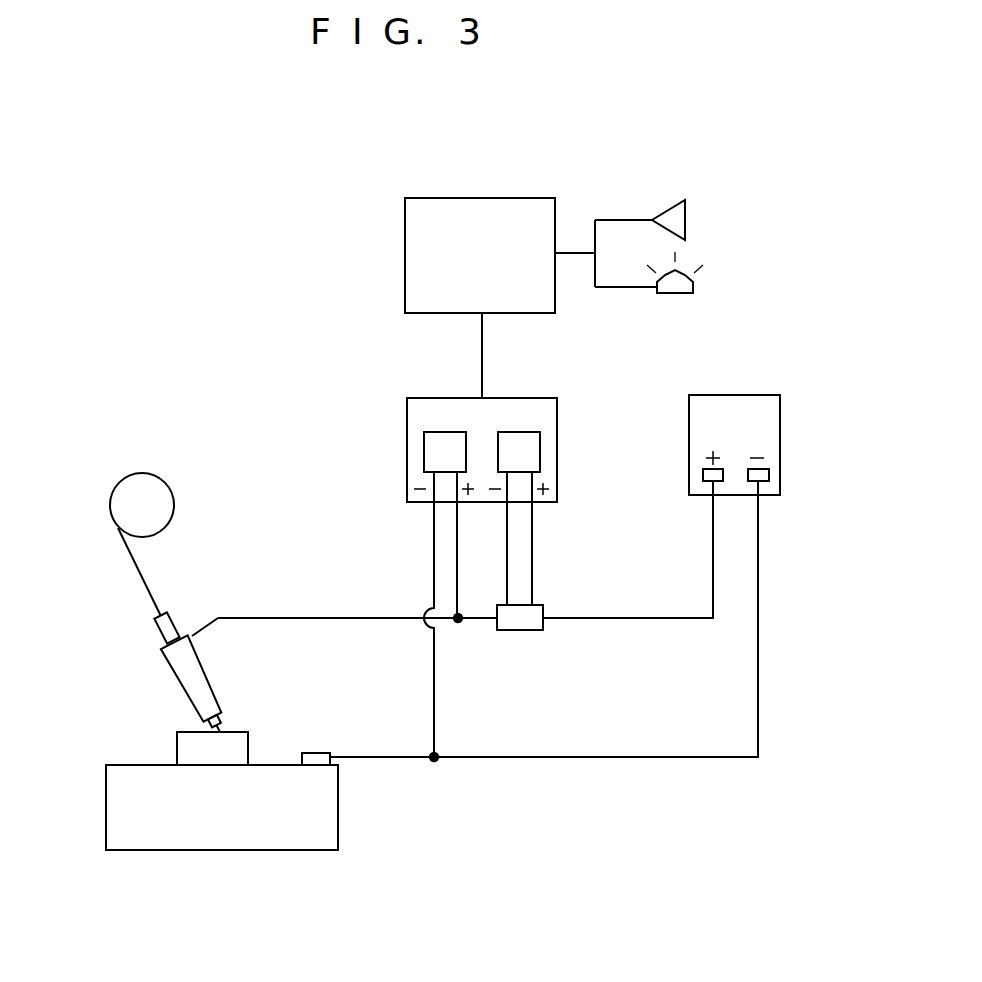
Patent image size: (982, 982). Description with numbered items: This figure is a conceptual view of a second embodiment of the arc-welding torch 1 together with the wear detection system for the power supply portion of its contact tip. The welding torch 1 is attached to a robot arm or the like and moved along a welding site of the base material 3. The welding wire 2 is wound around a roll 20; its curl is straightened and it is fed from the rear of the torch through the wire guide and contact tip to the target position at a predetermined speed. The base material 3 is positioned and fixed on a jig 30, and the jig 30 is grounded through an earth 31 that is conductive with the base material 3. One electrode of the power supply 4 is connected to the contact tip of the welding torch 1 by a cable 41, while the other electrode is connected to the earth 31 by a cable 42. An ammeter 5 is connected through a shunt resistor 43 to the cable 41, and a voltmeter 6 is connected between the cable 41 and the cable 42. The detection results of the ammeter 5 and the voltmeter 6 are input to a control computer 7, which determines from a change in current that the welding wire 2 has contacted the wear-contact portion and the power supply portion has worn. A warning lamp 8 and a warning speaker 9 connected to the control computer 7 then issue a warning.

The arc-welding torch 1 is at (154, 653).
The welding wire 2 is at (141, 573).
The base material 3 is at (190, 745).
The power supply 4 is at (745, 427).
The ammeter 5 is at (540, 452).
The voltmeter 6 is at (424, 452).
The control computer 7 is at (405, 252).
The warning lamp 8 is at (675, 295).
The warning speaker 9 is at (667, 215).
The roll 20 is at (143, 473).
The jig 30 is at (285, 823).
The earth 31 is at (318, 752).
The cable 41 is at (613, 615).
The cable 42 is at (630, 757).
The shunt resistor 43 is at (519, 630).